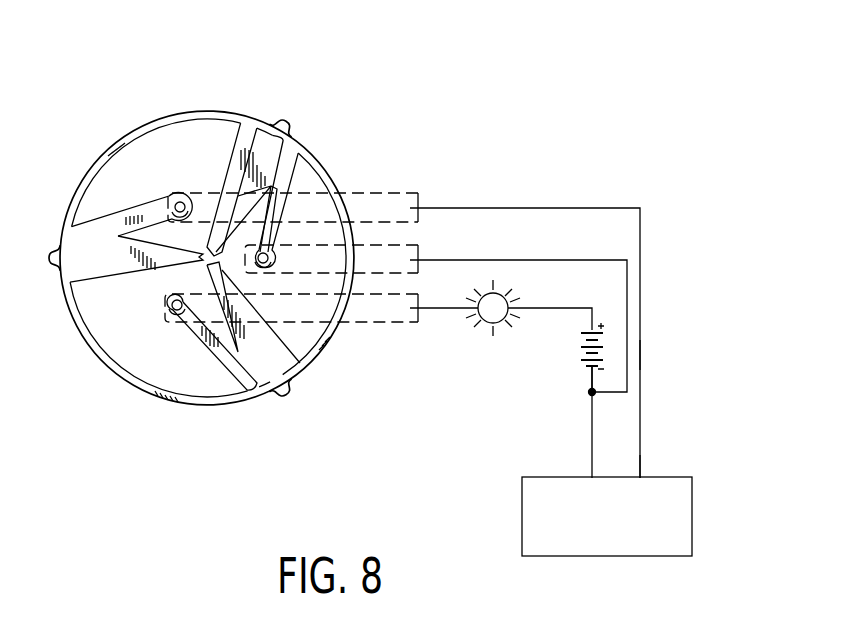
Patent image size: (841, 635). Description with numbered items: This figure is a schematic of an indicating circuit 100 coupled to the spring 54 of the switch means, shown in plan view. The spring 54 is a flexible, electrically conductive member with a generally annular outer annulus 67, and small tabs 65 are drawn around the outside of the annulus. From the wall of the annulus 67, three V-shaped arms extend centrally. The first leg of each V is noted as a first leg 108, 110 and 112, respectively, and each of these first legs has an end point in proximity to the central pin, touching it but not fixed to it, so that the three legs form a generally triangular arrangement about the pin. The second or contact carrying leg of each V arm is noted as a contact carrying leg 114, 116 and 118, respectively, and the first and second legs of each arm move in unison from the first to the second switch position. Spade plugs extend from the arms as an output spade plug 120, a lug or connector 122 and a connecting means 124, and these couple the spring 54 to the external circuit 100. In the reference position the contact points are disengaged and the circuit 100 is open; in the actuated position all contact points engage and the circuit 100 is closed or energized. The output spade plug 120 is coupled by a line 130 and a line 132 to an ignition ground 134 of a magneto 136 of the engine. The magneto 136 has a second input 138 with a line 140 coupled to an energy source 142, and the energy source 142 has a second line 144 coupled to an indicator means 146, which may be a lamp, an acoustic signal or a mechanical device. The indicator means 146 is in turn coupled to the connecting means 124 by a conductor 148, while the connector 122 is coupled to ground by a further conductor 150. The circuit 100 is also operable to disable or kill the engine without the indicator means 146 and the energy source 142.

The spring 54 is at (213, 109).
The mounting tab 65 is at (289, 116).
The outer annulus 67 is at (320, 162).
The indicating circuit 100 is at (553, 182).
The first leg 108 is at (153, 272).
The first leg 110 is at (212, 283).
The first leg 112 is at (238, 194).
The contact carrying leg 114 is at (139, 210).
The contact carrying leg 116 is at (197, 335).
The contact carrying leg 118 is at (279, 237).
The output spade plug 120 is at (383, 192).
The lug or connector 122 is at (407, 245).
The connecting means 124 is at (412, 325).
The line 130 is at (641, 355).
The line 132 is at (568, 208).
The ignition ground 134 is at (641, 473).
The magneto 136 is at (521, 518).
The second input 138 is at (590, 473).
The line 140 is at (590, 410).
The energy source 142 is at (582, 344).
The second line 144 is at (549, 308).
The indicator means 146 is at (482, 328).
The conductor 148 is at (449, 297).
The conductor 150 is at (562, 260).